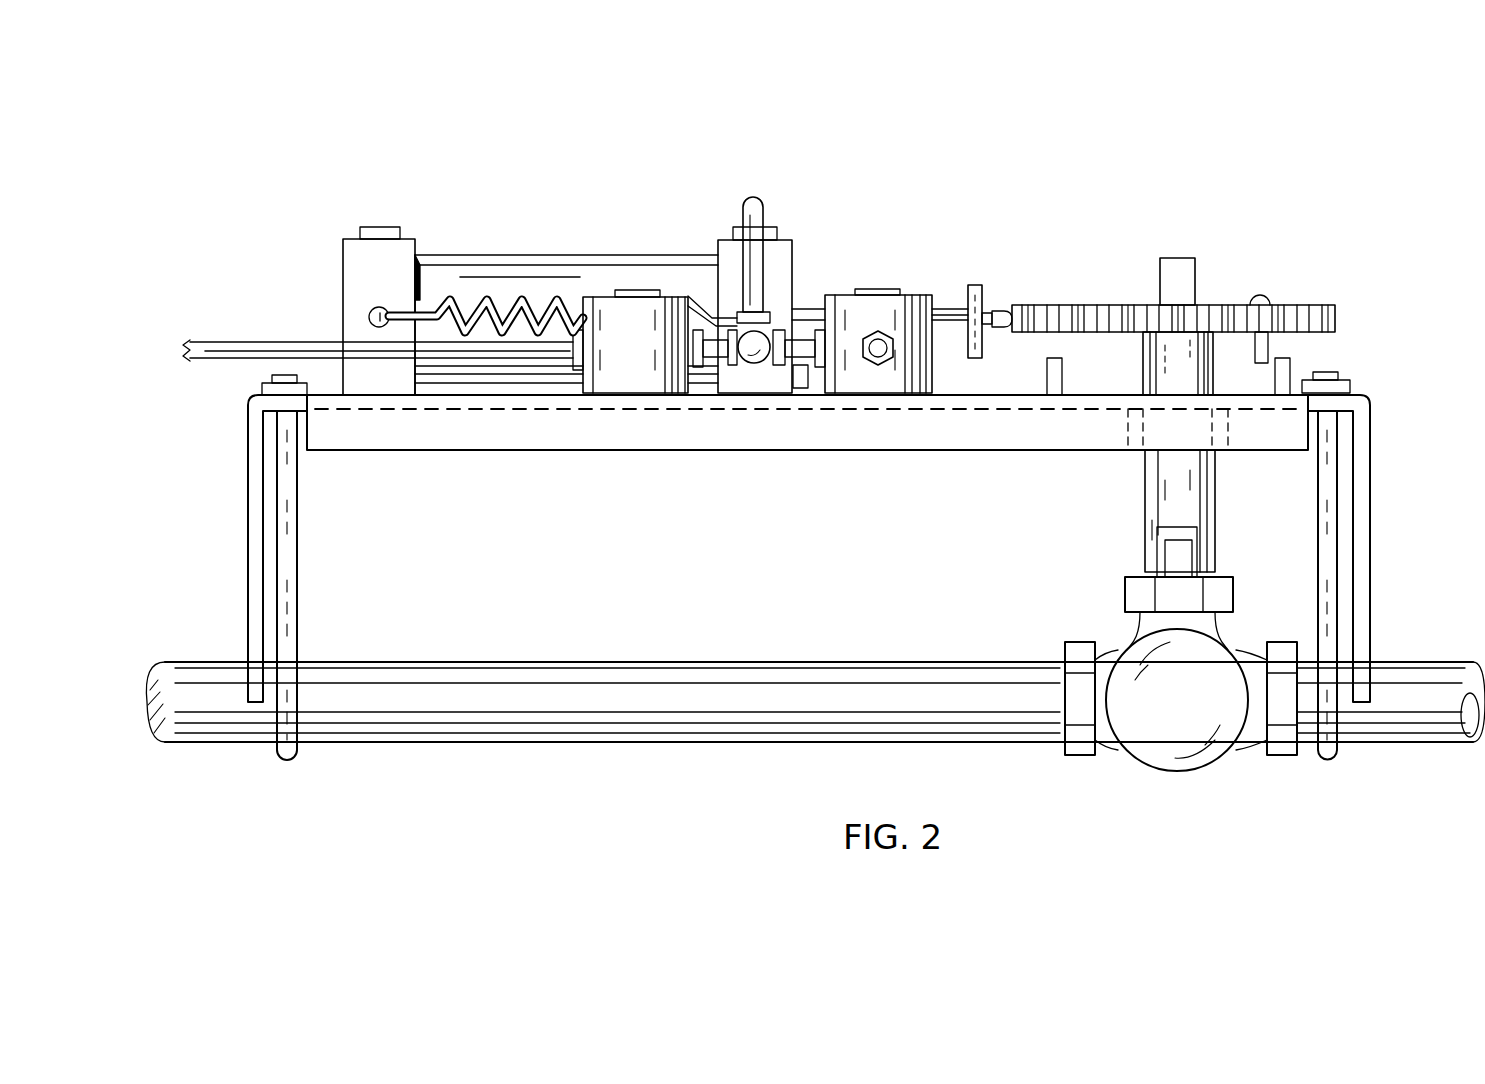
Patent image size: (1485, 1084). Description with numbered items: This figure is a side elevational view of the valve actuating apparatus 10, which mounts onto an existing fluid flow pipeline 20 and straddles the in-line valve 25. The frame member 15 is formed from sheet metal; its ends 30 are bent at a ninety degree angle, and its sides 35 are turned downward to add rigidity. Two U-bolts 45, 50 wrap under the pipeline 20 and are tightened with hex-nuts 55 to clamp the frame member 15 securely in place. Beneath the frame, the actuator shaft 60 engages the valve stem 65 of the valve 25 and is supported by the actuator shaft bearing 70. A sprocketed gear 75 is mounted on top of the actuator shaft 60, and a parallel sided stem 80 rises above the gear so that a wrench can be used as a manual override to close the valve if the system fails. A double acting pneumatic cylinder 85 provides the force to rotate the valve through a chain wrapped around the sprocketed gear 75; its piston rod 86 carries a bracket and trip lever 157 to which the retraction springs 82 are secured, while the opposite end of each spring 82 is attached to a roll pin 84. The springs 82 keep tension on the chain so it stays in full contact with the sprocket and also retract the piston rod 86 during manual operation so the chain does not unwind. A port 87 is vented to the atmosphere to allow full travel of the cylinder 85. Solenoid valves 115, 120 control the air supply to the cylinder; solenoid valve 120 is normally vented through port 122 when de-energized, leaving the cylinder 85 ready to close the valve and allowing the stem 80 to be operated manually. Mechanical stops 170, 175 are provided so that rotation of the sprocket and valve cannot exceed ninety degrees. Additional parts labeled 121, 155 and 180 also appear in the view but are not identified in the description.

The valve actuating apparatus 10 is at (888, 250).
The frame member 15 is at (470, 412).
The fluid flow pipeline 20 is at (646, 660).
The in-line valve 25 is at (1150, 722).
The ends 30 is at (247, 546).
The sides 35 is at (540, 430).
The U-bolt 45 is at (1326, 534).
The U-bolt 50 is at (300, 632).
The hex-nuts 55 is at (262, 389).
The actuator shaft 60 is at (1166, 495).
The valve stem 65 is at (1176, 554).
The actuator shaft bearing 70 is at (1130, 428).
The sprocketed gear 75 is at (1302, 305).
The parallel sided stem 80 is at (1178, 272).
The retraction springs 82 is at (511, 300).
The roll pin 84 is at (369, 316).
The double acting pneumatic cylinder 85 is at (560, 255).
The piston rod 86 is at (812, 303).
The port 87 is at (380, 228).
The solenoid valve 115 is at (628, 370).
The solenoid valve 120 is at (917, 300).
The ball coupling 121 is at (757, 366).
The port 122 is at (879, 365).
The stop block 155 is at (803, 388).
The bracket and trip lever 157 is at (983, 290).
The mechanical stop 170 is at (1062, 370).
The mechanical stop 175 is at (1290, 366).
The post 180 is at (1268, 348).